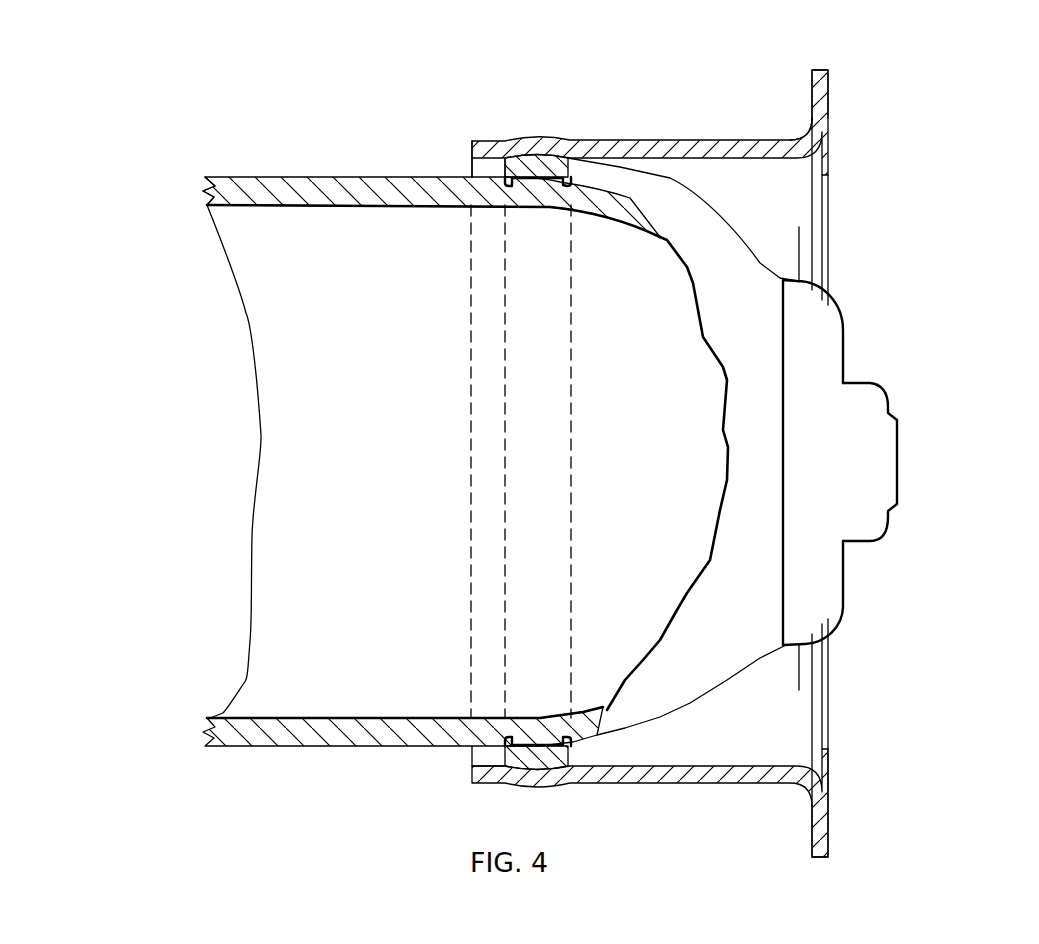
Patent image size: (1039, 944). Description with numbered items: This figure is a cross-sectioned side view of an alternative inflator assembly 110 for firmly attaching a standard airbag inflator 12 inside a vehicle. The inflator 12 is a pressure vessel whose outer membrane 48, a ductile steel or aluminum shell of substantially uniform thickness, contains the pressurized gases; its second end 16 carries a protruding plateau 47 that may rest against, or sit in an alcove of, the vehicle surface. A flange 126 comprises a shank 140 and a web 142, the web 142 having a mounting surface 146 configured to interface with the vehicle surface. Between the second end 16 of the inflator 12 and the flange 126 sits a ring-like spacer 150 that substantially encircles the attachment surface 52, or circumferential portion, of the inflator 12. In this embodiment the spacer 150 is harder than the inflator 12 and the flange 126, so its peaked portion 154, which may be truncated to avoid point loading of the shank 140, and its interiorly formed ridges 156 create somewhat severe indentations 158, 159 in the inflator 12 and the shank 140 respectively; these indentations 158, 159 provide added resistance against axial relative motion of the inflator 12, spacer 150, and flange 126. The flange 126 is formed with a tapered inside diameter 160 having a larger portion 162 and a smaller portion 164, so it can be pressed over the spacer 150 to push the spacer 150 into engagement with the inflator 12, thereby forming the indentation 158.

The inflator 12 is at (178, 178).
The second end 16 is at (341, 448).
The plateau 47 is at (880, 453).
The outer membrane 48 is at (322, 182).
The attachment surface 52 is at (573, 470).
The inflator assembly 110 is at (432, 137).
The flange 126 is at (714, 118).
The shank 140 is at (598, 138).
The web 142 is at (828, 102).
The mounting surface 146 is at (828, 78).
The spacer 150 is at (600, 167).
The peaked portion 154 is at (512, 140).
The ridges 156 is at (563, 180).
The indentation 158 is at (507, 180).
The indentation 159 is at (540, 766).
The tapered inside diameter 160 is at (670, 763).
The larger portion 162 is at (827, 763).
The smaller portion 164 is at (484, 762).